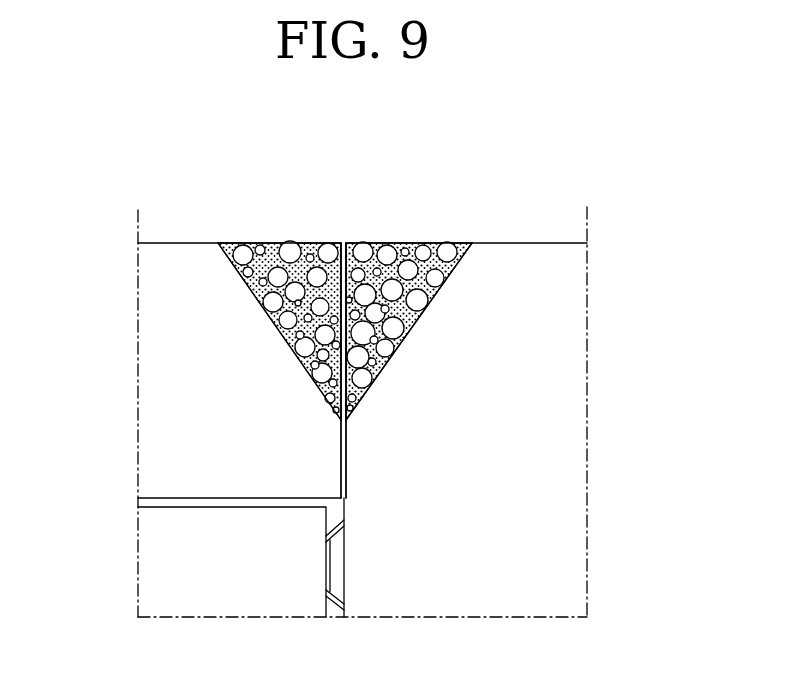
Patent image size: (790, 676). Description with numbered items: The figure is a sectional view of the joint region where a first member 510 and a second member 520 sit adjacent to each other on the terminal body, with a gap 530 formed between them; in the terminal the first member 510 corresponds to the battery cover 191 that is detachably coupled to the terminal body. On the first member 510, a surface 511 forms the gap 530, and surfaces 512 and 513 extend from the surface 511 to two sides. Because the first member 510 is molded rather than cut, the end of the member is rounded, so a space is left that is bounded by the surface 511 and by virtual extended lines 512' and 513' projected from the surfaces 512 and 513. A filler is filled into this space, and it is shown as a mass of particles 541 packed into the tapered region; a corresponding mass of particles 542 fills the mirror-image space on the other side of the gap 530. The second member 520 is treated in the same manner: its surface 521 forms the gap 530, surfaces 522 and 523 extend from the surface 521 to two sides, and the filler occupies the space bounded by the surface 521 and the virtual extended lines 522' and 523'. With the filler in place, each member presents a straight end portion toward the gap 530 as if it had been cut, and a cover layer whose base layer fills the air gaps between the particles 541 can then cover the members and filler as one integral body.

The battery cover 191 is at (152, 557).
The first member 510 is at (153, 388).
The surface 511 is at (280, 305).
The surface 512 is at (204, 459).
The surface 513 is at (143, 228).
The second member 520 is at (575, 387).
The surface 521 is at (420, 302).
The surface 522 is at (505, 459).
The surface 523 is at (565, 227).
The gap 530 is at (343, 243).
The particles 541 is at (242, 255).
The second filler 542 is at (449, 255).
The virtual extended line 512' is at (324, 295).
The virtual extended line 513' is at (279, 210).
The virtual extended line 522' is at (364, 295).
The virtual extended line 523' is at (409, 210).